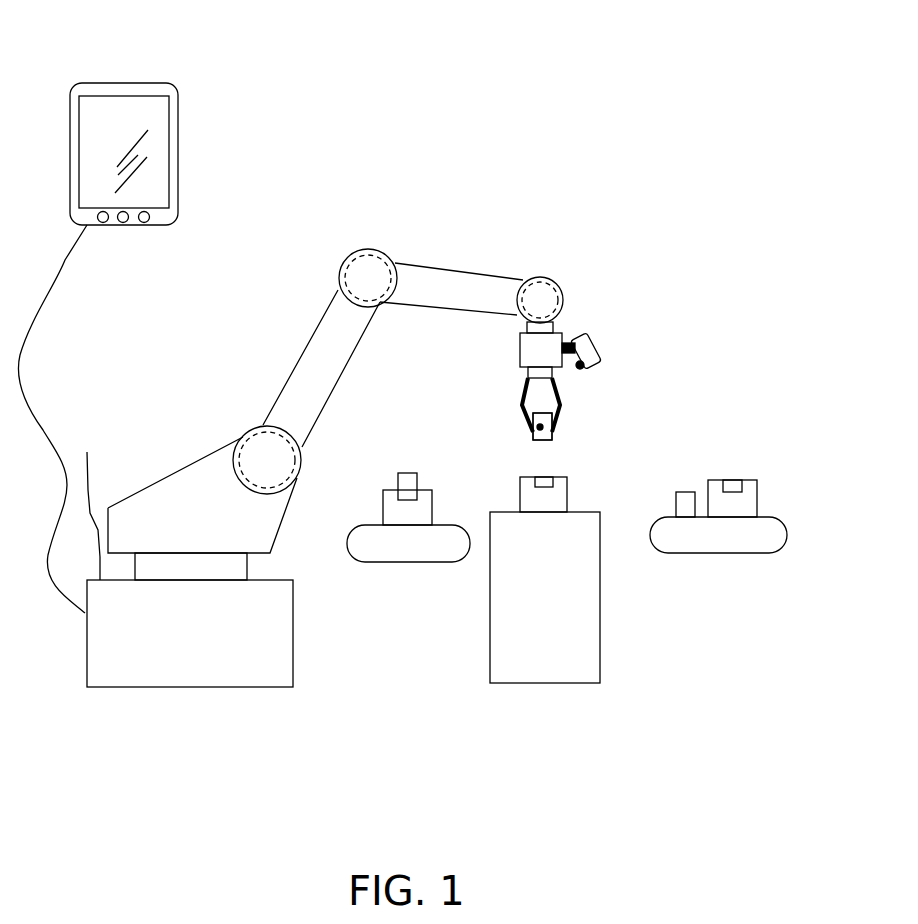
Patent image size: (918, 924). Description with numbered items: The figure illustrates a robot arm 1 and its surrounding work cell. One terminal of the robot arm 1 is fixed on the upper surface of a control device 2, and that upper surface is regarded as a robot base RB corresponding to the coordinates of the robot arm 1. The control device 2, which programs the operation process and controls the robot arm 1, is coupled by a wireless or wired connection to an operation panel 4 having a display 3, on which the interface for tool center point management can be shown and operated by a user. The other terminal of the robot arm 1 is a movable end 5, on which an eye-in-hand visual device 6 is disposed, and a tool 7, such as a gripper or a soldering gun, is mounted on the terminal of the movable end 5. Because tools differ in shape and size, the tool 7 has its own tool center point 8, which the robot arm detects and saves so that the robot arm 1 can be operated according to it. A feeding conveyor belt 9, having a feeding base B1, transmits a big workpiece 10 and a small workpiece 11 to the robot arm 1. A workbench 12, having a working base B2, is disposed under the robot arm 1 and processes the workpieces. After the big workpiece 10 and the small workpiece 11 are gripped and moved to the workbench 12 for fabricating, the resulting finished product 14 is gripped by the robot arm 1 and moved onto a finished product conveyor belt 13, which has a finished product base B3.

The robot arm 1 is at (297, 370).
The control device 2 is at (293, 650).
The display 3 is at (178, 125).
The operation panel 4 is at (128, 83).
The movable end 5 is at (520, 347).
The visual device 6 is at (602, 350).
The tool 7 is at (522, 396).
The tool center point 8 is at (535, 435).
The feeding conveyor belt 9 is at (712, 553).
The big workpiece 10 is at (558, 430).
The small workpiece 11 is at (560, 477).
The workbench 12 is at (602, 622).
The finished product conveyor belt 13 is at (390, 562).
The finished product 14 is at (428, 490).
The robot base RB is at (88, 500).
The feeding base B1 is at (768, 517).
The working base B2 is at (587, 512).
The finished product base B3 is at (370, 525).